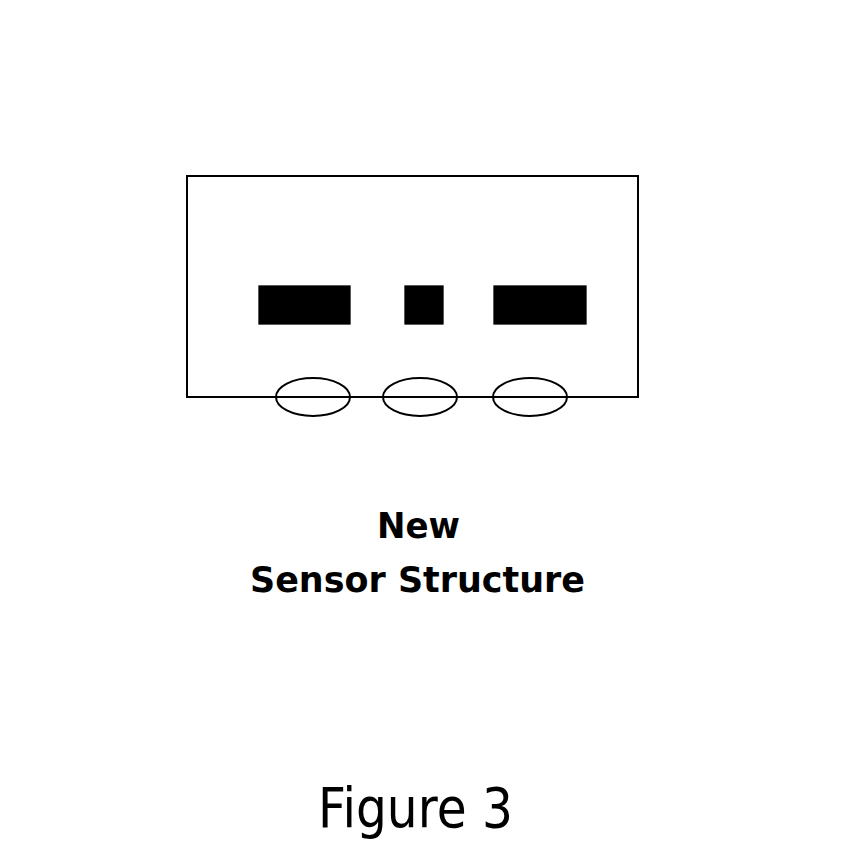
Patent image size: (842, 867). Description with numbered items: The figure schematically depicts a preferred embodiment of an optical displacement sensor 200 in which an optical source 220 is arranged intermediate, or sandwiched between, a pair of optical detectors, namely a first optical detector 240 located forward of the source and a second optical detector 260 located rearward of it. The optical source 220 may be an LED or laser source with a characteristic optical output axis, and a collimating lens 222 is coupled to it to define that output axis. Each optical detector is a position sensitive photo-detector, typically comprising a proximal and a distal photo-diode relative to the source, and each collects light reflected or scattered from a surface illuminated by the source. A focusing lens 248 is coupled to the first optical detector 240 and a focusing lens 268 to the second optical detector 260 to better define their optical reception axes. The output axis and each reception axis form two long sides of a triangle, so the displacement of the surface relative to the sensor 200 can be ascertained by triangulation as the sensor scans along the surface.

The optical displacement sensor 200 is at (547, 142).
The optical source 220 is at (407, 275).
The collimating lens 222 is at (430, 400).
The first optical detector 240 is at (268, 280).
The focusing lens 248 is at (312, 400).
The second optical detector 260 is at (565, 278).
The focusing lens 268 is at (535, 402).